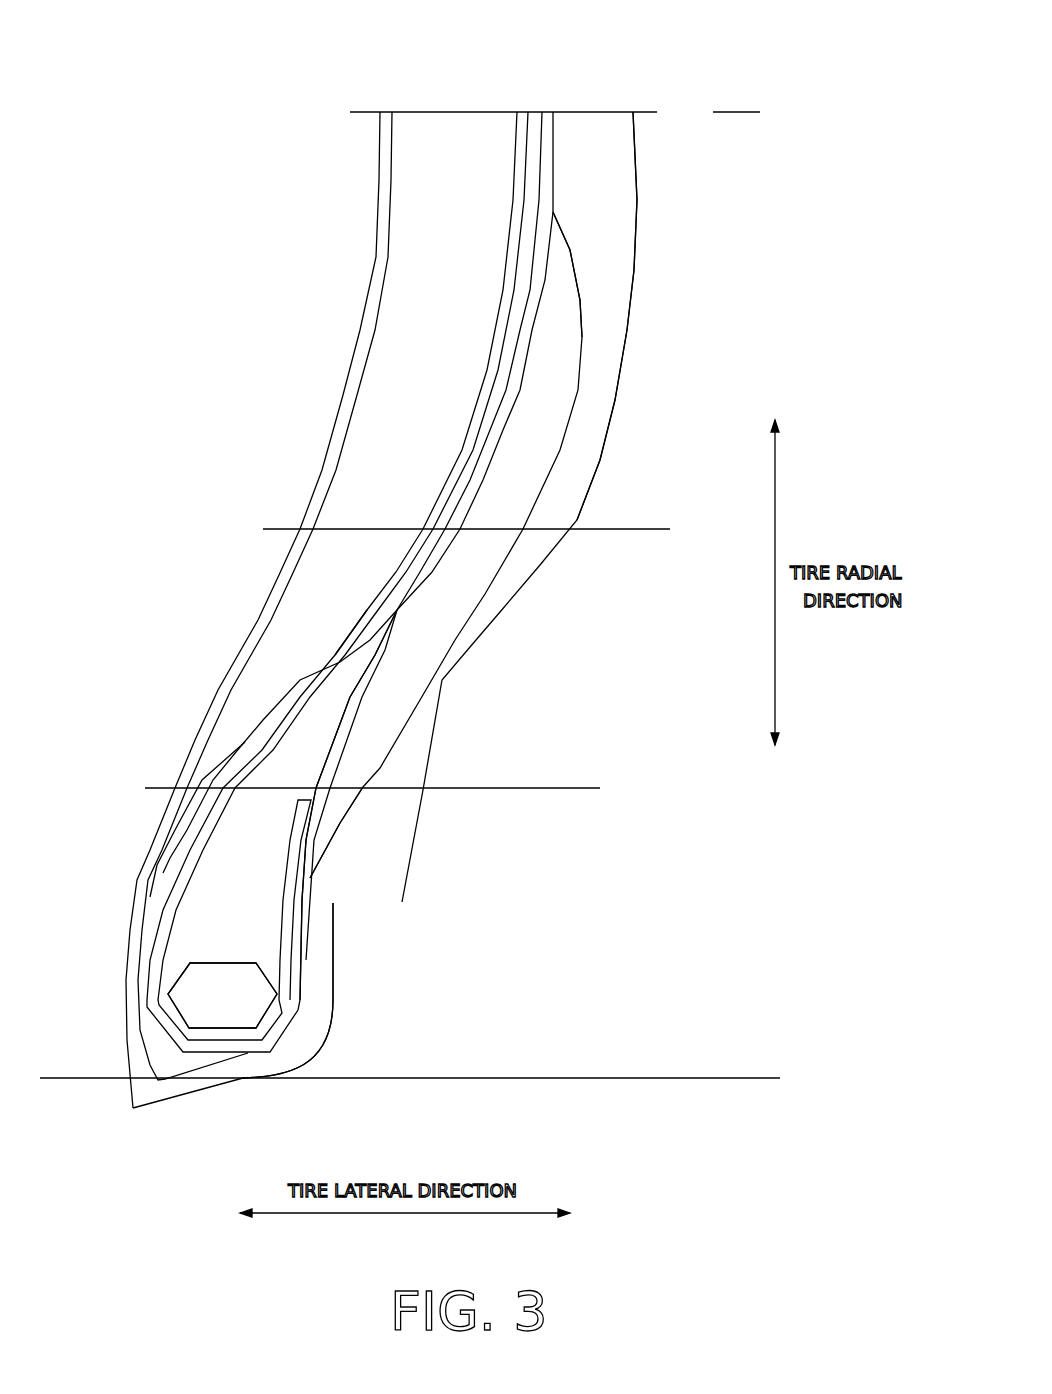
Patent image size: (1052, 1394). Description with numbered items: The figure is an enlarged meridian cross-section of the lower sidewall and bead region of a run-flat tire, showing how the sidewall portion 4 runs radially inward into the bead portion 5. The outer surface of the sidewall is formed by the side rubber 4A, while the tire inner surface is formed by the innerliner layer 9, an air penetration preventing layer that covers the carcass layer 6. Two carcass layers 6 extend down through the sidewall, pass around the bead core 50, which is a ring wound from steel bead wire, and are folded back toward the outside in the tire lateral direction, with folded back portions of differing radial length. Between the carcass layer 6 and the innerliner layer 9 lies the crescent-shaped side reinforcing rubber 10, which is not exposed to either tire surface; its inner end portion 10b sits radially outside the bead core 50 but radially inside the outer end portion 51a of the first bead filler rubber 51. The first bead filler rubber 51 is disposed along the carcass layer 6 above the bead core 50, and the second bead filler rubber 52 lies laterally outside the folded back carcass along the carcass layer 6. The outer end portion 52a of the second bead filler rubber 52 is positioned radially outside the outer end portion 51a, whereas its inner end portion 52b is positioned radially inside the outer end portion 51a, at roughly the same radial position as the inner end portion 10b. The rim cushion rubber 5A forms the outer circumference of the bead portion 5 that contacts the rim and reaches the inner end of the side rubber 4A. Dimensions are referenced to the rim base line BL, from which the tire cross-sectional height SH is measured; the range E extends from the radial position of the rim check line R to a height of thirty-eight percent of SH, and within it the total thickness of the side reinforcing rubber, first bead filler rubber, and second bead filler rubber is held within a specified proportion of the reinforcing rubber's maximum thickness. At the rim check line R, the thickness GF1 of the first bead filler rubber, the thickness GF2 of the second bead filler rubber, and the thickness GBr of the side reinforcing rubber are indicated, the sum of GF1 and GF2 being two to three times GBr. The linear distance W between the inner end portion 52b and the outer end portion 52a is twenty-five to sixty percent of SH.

The sidewall portion 4 is at (652, 386).
The side rubber 4A is at (613, 310).
The bead portion 5 is at (377, 1034).
The rim cushion rubber 5A is at (323, 990).
The carcass layer 6 is at (515, 128).
The innerliner layer 9 is at (380, 257).
The side reinforcing rubber 10 is at (377, 395).
The inner end portion 10b is at (165, 882).
The bead core 50 is at (193, 990).
The first bead filler rubber 51 is at (193, 933).
The outer end portion 51a is at (397, 610).
The second bead filler rubber 52 is at (448, 638).
The outer end portion 52a is at (553, 212).
The inner end portion 52b is at (333, 903).
The linear distance W is at (333, 903).
The tire cross-sectional height SH is at (652, 1078).
The range E is at (580, 529).
The rim check line R is at (423, 790).
The rim base line BL is at (525, 1080).
The thickness of side reinforcing rubber GBr is at (176, 690).
The thickness of first bead filler rubber GF1 is at (277, 690).
The thickness of second bead filler rubber GF2 is at (364, 892).